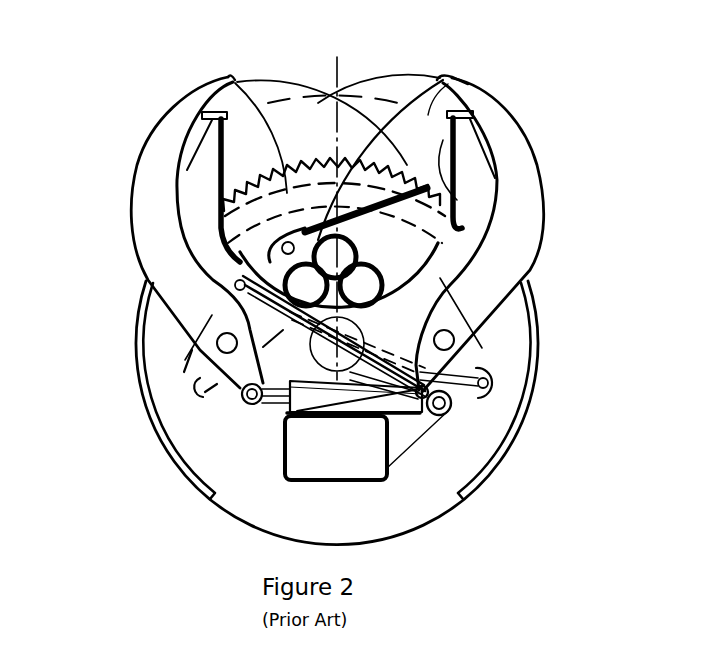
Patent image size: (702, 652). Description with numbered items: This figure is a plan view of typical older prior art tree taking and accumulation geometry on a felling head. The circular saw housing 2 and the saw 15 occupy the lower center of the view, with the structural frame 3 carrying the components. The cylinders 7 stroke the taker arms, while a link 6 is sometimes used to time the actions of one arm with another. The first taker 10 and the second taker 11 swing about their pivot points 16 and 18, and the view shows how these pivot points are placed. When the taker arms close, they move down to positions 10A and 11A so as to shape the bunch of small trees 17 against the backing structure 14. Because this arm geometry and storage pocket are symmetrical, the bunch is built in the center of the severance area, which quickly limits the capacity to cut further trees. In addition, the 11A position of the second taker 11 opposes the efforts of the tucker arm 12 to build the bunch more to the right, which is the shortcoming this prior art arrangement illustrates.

The saw housing 2 is at (206, 490).
The structural frame 3 is at (313, 482).
The link 6 is at (285, 418).
The cylinders 7 is at (393, 412).
The first taker 10 is at (128, 186).
The closed position of the first taker 10A is at (445, 193).
The second taker 11 is at (537, 150).
The closed position of the second taker 11A is at (230, 78).
The tucker arm 12 is at (466, 89).
The backing structure 14 is at (440, 153).
The saw 15 is at (336, 92).
The pivot point 16 is at (218, 340).
The bunch of small trees 17 is at (388, 272).
The pivot point 18 is at (447, 337).